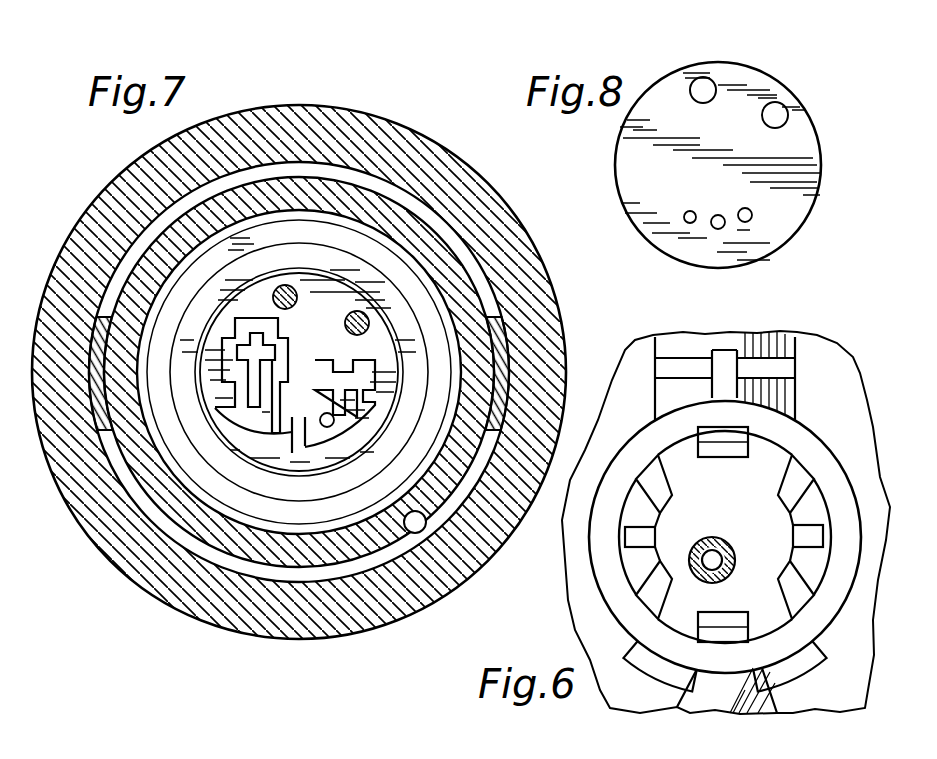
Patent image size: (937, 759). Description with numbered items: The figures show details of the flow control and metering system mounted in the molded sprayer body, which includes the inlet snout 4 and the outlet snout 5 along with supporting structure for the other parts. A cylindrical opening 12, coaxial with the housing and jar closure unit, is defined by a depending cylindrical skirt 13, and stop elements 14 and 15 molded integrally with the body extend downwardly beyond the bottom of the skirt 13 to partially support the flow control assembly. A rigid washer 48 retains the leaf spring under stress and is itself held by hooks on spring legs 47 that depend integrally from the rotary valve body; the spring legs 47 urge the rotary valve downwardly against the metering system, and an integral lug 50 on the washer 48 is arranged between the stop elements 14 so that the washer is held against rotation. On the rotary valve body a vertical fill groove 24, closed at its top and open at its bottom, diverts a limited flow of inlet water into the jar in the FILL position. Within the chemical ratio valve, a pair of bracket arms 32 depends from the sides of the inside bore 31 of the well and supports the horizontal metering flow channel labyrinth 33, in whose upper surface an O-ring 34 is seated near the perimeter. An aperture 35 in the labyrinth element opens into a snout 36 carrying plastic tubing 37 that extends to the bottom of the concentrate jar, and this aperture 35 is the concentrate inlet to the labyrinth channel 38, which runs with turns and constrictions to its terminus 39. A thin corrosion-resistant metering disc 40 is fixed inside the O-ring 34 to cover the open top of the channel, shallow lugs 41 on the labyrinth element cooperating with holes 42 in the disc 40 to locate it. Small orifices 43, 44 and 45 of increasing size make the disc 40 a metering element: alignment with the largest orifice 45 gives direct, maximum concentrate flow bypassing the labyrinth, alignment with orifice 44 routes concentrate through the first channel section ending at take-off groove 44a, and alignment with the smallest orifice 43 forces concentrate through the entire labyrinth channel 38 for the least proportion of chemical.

In FIG. 6, the inlet snout 4 is at (683, 705).
In FIG. 6, the outlet snout 5 is at (783, 340).
In FIG. 7, the cylindrical opening 12 is at (210, 563).
In FIG. 7, the cylindrical skirt 13 is at (133, 586).
In FIG. 6, the stop elements 14 is at (753, 358).
In FIG. 6, the stop elements 15 is at (632, 653).
In FIG. 7, the fill groove 24 is at (407, 521).
In FIG. 7, the inside bore 31 is at (290, 584).
In FIG. 7, the bracket arms 32 is at (511, 333).
In FIG. 6, the bracket arms 32 is at (661, 522).
In FIG. 7, the metering flow channel labyrinth 33 is at (328, 280).
In FIG. 7, the O-ring 34 is at (205, 297).
In FIG. 7, the aperture 35 is at (321, 417).
In FIG. 6, the snout 36 is at (716, 548).
In FIG. 6, the plastic tubing 37 is at (727, 547).
In FIG. 7, the labyrinth channel 38 is at (330, 360).
In FIG. 7, the terminus 39 is at (270, 422).
In FIG. 8, the metering disc 40 is at (616, 150).
In FIG. 7, the lugs 41 is at (295, 306).
In FIG. 8, the holes 42 is at (775, 110).
In FIG. 8, the orifice 43 is at (690, 220).
In FIG. 8, the orifice 44 is at (718, 226).
In FIG. 7, the take-off groove 44a is at (300, 440).
In FIG. 8, the orifice 45 is at (748, 220).
In FIG. 6, the spring legs 47 is at (723, 457).
In FIG. 6, the rigid washer 48 is at (610, 580).
In FIG. 6, the lug 50 is at (714, 387).